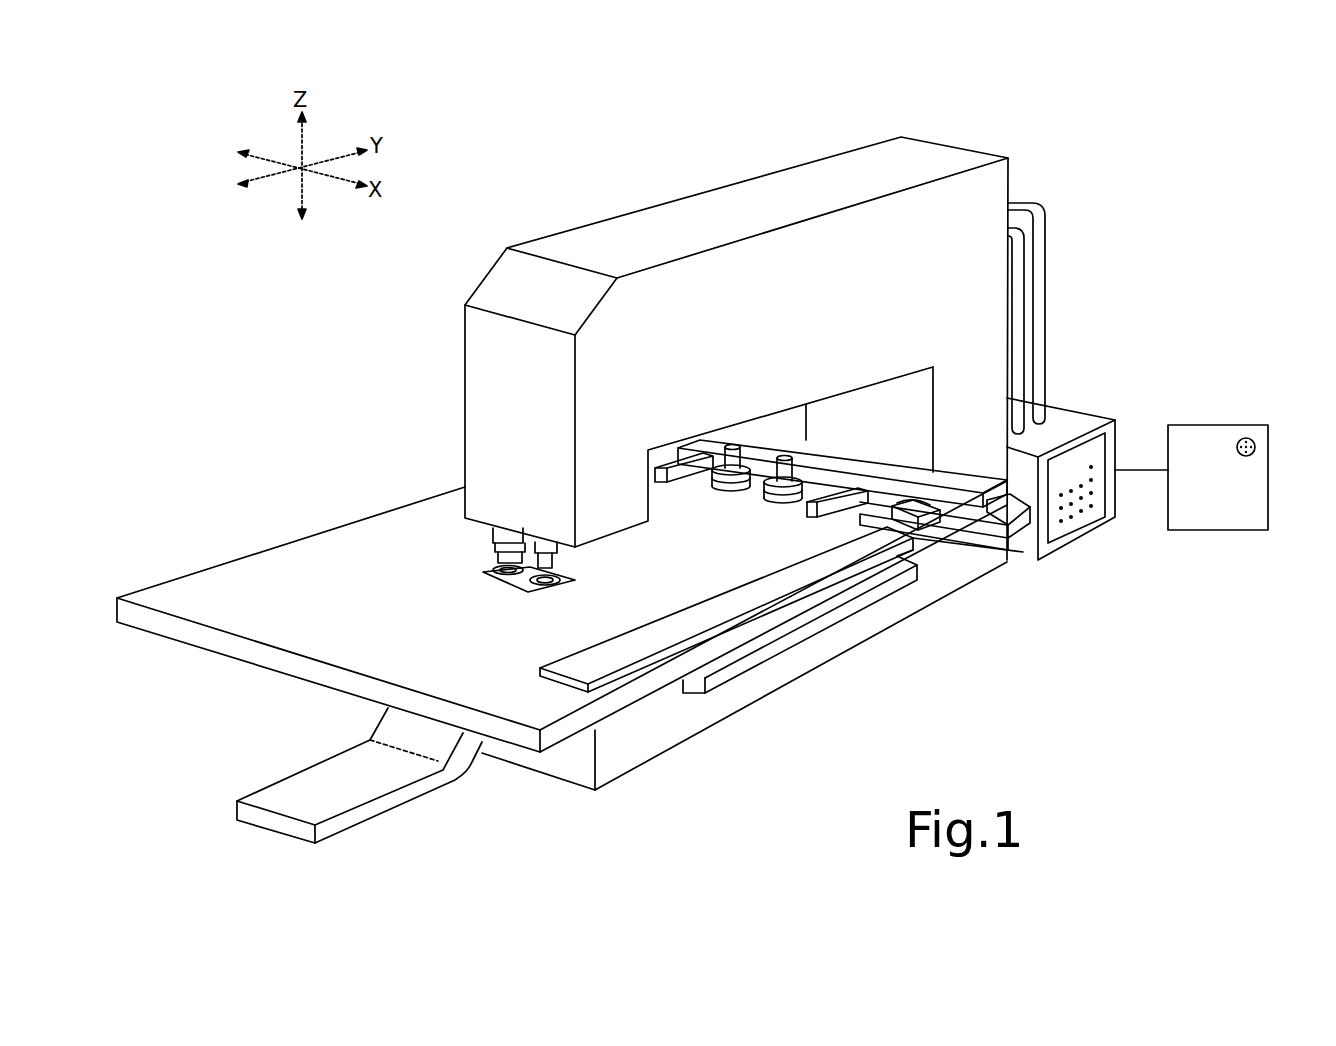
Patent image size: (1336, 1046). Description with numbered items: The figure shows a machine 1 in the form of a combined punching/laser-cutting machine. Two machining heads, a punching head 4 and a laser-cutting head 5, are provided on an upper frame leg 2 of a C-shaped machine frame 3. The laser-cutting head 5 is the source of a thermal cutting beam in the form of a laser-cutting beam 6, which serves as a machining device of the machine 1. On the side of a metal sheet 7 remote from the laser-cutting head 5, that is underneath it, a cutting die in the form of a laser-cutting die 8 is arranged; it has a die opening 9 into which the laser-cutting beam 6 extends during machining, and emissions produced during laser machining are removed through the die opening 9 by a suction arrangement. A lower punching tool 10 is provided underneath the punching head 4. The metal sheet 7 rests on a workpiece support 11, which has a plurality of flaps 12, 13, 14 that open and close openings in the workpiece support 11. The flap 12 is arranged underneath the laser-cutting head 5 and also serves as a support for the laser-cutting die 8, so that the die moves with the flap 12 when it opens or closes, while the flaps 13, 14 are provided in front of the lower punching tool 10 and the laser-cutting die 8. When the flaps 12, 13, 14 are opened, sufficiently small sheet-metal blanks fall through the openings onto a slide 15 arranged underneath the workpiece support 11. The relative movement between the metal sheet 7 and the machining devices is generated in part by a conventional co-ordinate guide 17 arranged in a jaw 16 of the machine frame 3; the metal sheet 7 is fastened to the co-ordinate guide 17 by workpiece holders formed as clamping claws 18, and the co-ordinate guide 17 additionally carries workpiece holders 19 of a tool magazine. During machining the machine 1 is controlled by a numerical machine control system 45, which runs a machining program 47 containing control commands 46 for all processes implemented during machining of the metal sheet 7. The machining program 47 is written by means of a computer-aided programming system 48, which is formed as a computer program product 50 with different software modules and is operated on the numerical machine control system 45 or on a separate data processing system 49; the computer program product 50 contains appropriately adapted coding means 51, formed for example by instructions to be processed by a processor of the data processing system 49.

The machine 1 is at (603, 202).
The upper frame leg 2 is at (789, 339).
The machine frame 3 is at (795, 153).
The punching head 4 is at (503, 562).
The laser-cutting head 5 is at (793, 637).
The laser-cutting beam 6 is at (520, 586).
The metal sheet 7 is at (853, 547).
The laser-cutting die 8 is at (558, 595).
The die opening 9 is at (586, 580).
The lower punching tool 10 is at (495, 572).
The workpiece support 11 is at (187, 588).
The flap 12 is at (562, 550).
The flap 13 is at (513, 593).
The flap 14 is at (520, 598).
The slide 15 is at (443, 738).
The jaw 16 is at (920, 387).
The co-ordinate guide 17 is at (1016, 530).
The clamping claws 18 is at (803, 513).
The workpiece holders 19 is at (908, 505).
The numerical machine control system 45 is at (1082, 538).
The control commands 46 is at (1105, 458).
The machining program 47 is at (1098, 500).
The programming system 48 is at (1217, 495).
The data processing system 49 is at (1216, 406).
The computer program product 50 is at (1249, 438).
The coding means 51 is at (1257, 452).